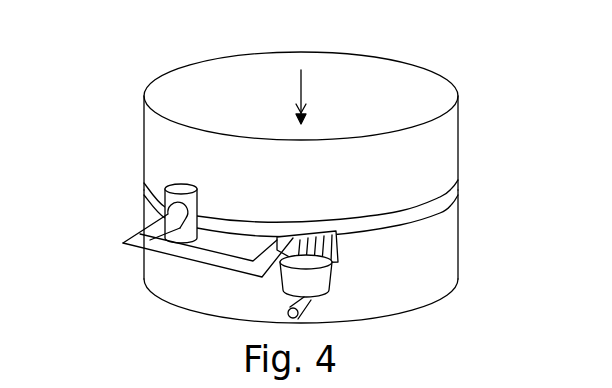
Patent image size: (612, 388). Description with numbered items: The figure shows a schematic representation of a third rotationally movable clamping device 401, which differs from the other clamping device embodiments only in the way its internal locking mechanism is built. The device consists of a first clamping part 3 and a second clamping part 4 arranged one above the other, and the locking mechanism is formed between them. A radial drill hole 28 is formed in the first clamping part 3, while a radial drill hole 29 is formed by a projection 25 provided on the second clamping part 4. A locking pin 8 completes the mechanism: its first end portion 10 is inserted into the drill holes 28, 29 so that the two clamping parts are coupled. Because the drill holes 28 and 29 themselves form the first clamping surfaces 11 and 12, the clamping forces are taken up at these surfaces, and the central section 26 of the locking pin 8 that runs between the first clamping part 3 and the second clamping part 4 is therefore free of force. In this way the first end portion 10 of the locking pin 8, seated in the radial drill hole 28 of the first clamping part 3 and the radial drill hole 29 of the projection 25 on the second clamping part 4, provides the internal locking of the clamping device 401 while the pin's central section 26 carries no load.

The clamping device 401 is at (486, 76).
The first clamping part 3 is at (442, 146).
The second clamping part 4 is at (440, 242).
The locking pin 8 is at (302, 225).
The first end portion 10 is at (123, 243).
The first clamping surface 11 is at (203, 190).
The first clamping surface 12 is at (165, 234).
The projection 25 is at (177, 187).
The central section 26 is at (198, 260).
The radial drill hole 28 is at (212, 190).
The radial drill hole 29 is at (110, 203).